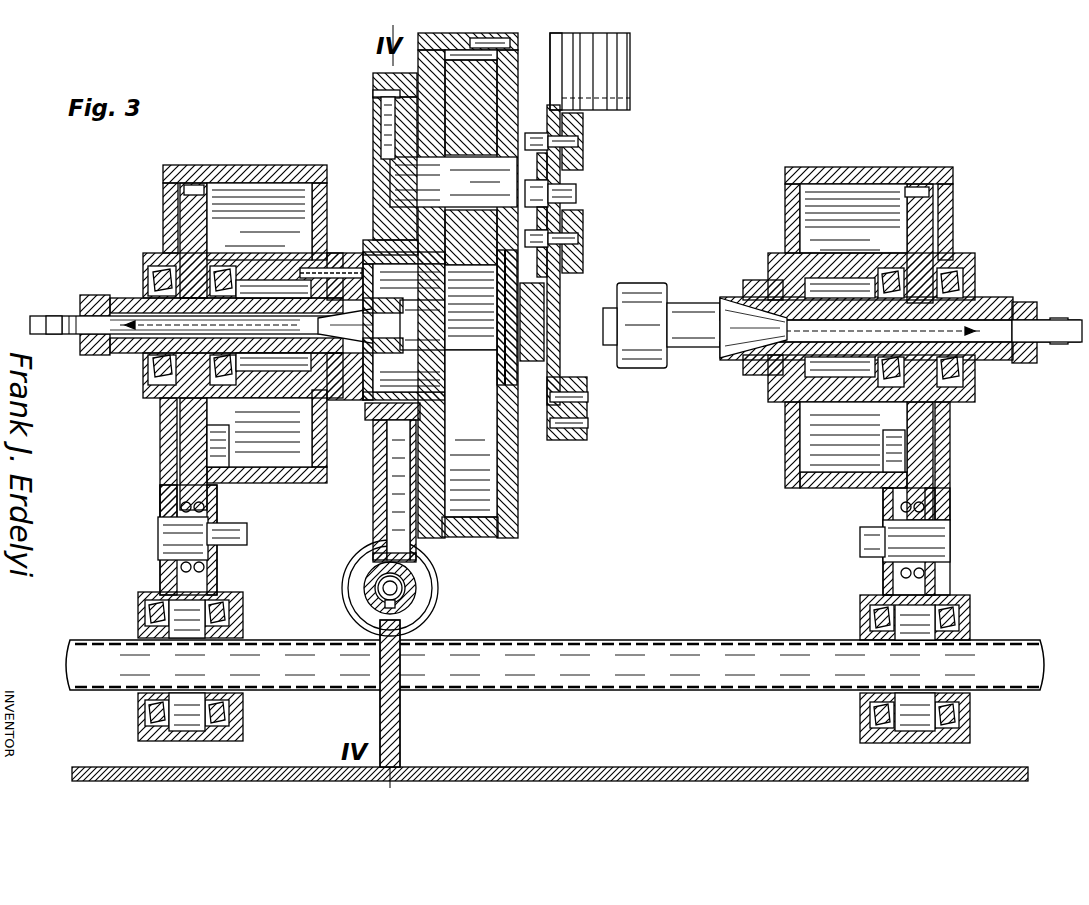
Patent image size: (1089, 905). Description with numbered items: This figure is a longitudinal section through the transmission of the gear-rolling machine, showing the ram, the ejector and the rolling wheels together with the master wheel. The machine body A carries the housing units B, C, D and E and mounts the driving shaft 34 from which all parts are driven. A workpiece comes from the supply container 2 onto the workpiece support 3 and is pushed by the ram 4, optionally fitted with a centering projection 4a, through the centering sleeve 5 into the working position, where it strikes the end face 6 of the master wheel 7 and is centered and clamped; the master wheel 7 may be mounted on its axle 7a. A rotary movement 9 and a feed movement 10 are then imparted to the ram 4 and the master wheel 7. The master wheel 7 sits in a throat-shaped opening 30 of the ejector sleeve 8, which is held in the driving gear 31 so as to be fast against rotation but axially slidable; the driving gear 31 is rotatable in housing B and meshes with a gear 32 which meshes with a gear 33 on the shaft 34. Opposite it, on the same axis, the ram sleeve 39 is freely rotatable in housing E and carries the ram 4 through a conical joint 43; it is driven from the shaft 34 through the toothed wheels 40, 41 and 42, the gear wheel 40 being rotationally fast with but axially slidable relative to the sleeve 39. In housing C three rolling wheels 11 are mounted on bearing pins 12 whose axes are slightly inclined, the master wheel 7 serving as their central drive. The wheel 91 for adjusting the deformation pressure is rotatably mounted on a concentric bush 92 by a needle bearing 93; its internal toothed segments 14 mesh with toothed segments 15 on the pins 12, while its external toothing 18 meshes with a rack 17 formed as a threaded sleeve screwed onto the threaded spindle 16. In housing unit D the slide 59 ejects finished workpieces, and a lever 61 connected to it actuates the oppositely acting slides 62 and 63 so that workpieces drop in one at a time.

The machine body A is at (396, 731).
The housing unit B is at (246, 180).
The housing unit C is at (495, 40).
The housing unit D is at (582, 64).
The housing unit E is at (858, 172).
The supply container 2 is at (620, 100).
The workpiece support 3 is at (580, 386).
The ram 4 is at (640, 292).
The centering projection 4a is at (606, 345).
The centering sleeve 5 is at (560, 305).
The end face 6 is at (505, 385).
The master wheel 7 is at (470, 352).
The axle 7a is at (416, 318).
The sleeve 8 is at (130, 358).
The rotary movement 9 is at (60, 312).
The feed movement 10 is at (128, 308).
The rolling wheels 11 is at (460, 106).
The bearing pins 12 is at (400, 185).
The toothed segments 14 is at (392, 76).
The toothed segments 15 is at (400, 130).
The threaded spindle 16 is at (405, 590).
The rack 17 is at (410, 602).
The external toothing 18 is at (372, 572).
The throat-shaped opening 30 is at (352, 265).
The driving gear 31 is at (182, 213).
The gear 32 is at (190, 467).
The gear 33 is at (191, 641).
The shaft 34 is at (290, 656).
The sleeve 39 is at (742, 362).
The gear wheel 40 is at (948, 222).
The toothed wheel 41 is at (940, 480).
The toothed wheel 42 is at (913, 642).
The conical joint 43 is at (736, 300).
The slide 59 is at (541, 337).
The lever 61 is at (565, 212).
The slide 62 is at (583, 248).
The slide 63 is at (583, 150).
The wheel 91 is at (375, 143).
The concentric bush 92 is at (372, 412).
The needle bearing 93 is at (373, 442).